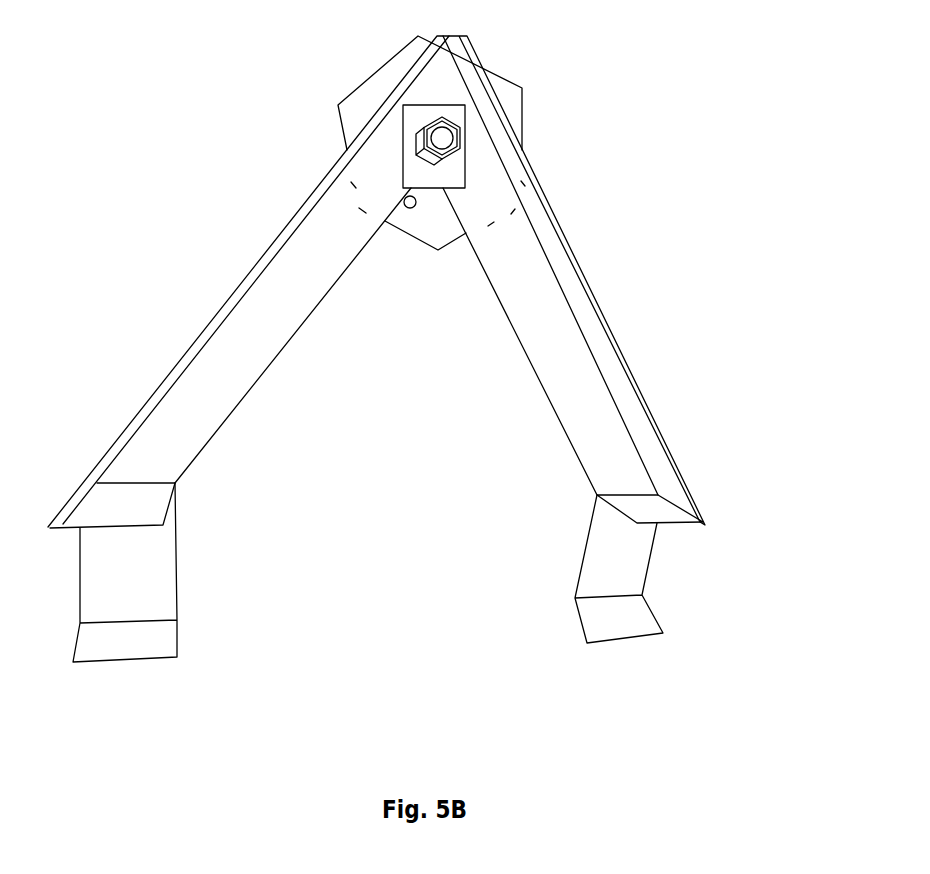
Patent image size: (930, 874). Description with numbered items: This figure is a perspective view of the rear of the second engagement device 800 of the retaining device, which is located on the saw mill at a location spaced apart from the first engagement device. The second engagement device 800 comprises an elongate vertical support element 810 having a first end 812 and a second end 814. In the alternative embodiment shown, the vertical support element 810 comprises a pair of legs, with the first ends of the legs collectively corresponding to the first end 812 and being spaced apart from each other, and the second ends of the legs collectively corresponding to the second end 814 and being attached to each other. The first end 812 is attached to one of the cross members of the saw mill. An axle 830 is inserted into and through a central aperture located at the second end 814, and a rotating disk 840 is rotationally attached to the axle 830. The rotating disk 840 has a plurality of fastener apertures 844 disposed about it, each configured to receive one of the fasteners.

The second engagement device 800 is at (660, 279).
The vertical support element 810 is at (265, 310).
The first end 812 is at (622, 568).
The second end 814 is at (437, 86).
The axle 830 is at (462, 137).
The rotating disk 840 is at (377, 85).
The fastener apertures 844 is at (406, 208).